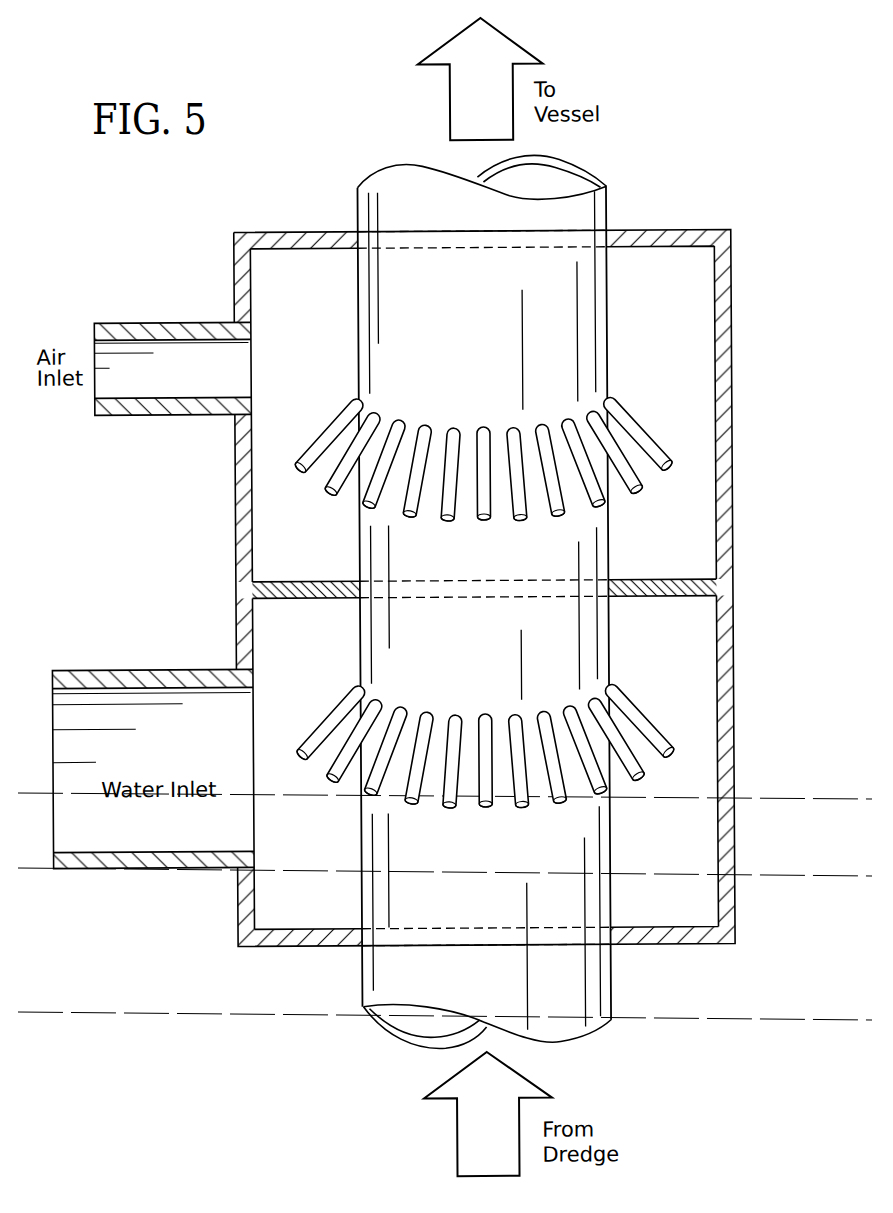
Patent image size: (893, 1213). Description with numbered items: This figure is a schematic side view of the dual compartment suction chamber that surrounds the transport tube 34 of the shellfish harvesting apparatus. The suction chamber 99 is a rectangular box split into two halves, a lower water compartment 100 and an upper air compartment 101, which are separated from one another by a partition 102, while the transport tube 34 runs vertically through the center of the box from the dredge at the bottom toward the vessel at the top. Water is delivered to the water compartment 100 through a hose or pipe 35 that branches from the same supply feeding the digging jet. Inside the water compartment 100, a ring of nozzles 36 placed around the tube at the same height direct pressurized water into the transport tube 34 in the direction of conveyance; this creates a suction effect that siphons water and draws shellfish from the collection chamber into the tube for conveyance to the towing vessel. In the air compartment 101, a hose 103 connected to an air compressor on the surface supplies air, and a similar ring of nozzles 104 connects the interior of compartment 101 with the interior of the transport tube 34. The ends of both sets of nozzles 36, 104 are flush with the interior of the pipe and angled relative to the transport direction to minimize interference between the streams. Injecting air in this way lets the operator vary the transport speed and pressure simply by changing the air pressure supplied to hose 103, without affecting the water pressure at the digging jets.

The transport tube 34 is at (585, 288).
The hose or pipe 35 is at (145, 827).
The nozzles 36 is at (457, 720).
The suction chamber 99 is at (65, 618).
The compartment 100 is at (700, 863).
The compartment 101 is at (700, 437).
The partition 102 is at (668, 578).
The hose 103 is at (182, 380).
The nozzles 104 is at (617, 457).